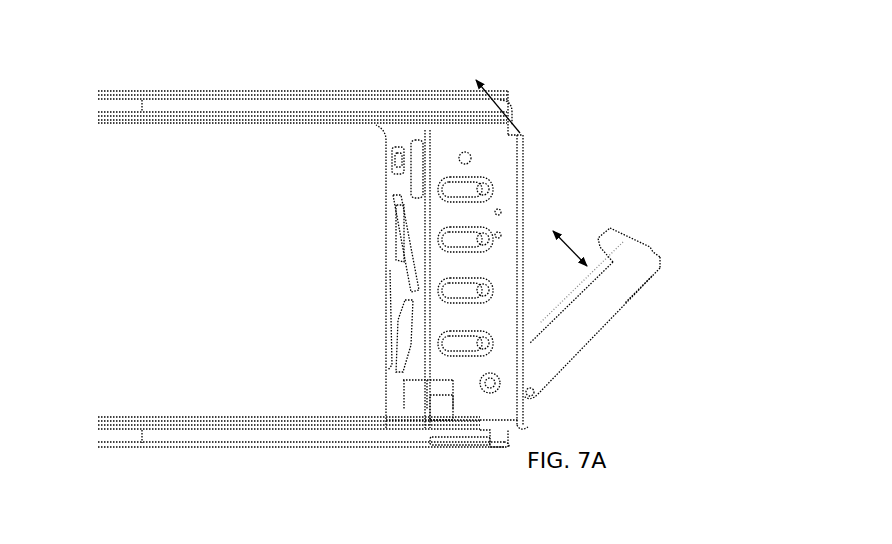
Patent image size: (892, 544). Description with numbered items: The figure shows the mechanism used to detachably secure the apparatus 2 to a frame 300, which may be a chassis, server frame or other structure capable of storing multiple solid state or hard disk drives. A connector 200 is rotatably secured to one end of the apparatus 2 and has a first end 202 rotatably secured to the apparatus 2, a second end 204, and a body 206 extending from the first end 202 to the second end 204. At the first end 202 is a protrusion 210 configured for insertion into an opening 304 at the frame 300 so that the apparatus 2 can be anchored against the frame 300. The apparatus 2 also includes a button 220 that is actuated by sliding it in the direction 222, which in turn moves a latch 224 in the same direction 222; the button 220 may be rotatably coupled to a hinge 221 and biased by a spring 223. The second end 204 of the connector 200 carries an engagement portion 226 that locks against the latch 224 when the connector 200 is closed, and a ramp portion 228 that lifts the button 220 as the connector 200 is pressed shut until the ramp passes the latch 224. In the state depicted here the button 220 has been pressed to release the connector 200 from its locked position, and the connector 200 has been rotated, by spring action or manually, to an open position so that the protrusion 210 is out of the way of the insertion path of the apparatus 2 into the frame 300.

The apparatus 2 is at (186, 88).
The connector 200 is at (605, 327).
The first end 202 is at (536, 396).
The second end 204 is at (656, 277).
The body 206 is at (631, 300).
The protrusion 210 is at (459, 421).
The button 220 is at (522, 137).
The hinge 221 is at (460, 152).
The direction 222 is at (505, 107).
The spring 223 is at (426, 132).
The latch 224 is at (523, 167).
The engagement portion 226 is at (652, 248).
The ramp portion 228 is at (623, 230).
The frame 300 is at (363, 440).
The opening 304 is at (455, 441).